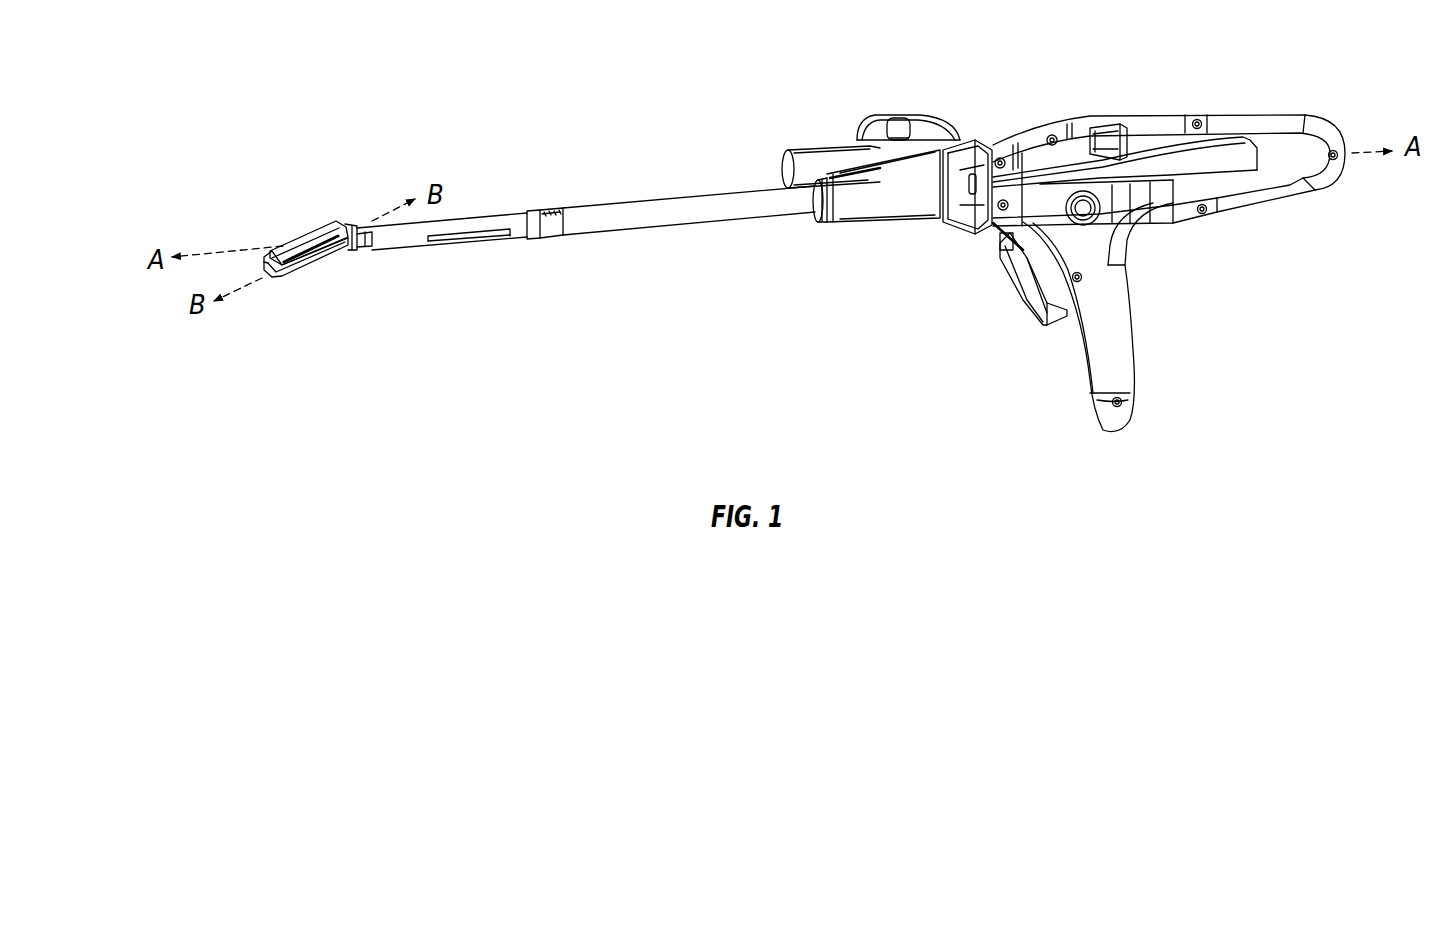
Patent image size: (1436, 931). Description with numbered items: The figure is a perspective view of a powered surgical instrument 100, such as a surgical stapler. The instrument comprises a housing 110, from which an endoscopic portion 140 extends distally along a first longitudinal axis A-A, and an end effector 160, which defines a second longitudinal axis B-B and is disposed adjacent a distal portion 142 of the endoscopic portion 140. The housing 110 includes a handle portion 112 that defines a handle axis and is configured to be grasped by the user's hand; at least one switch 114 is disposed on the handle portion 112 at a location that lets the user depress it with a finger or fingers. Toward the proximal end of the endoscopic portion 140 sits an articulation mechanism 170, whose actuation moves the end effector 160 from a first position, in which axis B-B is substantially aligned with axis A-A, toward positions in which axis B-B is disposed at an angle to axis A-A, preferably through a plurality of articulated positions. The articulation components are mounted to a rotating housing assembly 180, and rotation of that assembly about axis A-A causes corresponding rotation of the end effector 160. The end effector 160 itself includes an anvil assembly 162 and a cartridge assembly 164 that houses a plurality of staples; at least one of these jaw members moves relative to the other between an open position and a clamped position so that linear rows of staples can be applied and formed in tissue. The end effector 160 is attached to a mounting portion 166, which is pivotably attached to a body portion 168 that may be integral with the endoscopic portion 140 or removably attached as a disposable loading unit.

The powered surgical instrument 100 is at (655, 76).
The housing 110 is at (1173, 111).
The handle portion 112 is at (1140, 315).
The switch 114 is at (1010, 293).
The endoscopic portion 140 is at (540, 194).
The distal portion 142 is at (457, 224).
The end effector 160 is at (321, 218).
The anvil assembly 162 is at (286, 244).
The cartridge assembly 164 is at (309, 266).
The mounting portion 166 is at (381, 250).
The body portion 168 is at (470, 241).
The articulation mechanism 170 is at (901, 93).
The rotating housing assembly 180 is at (993, 111).